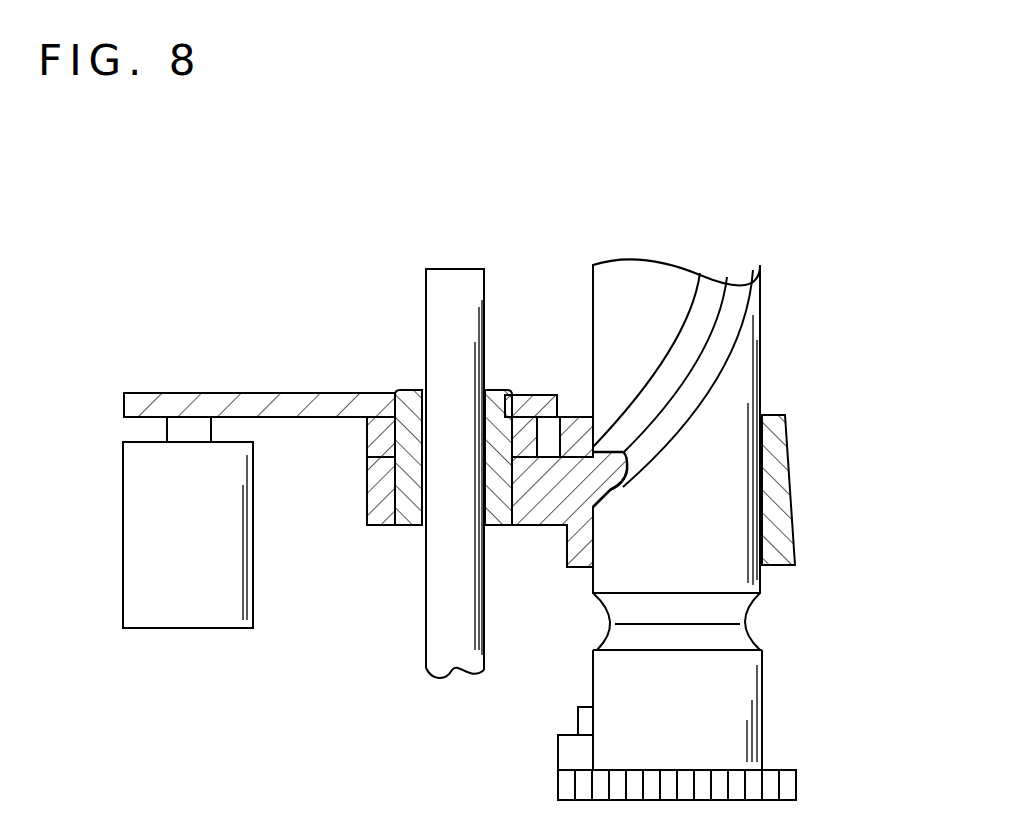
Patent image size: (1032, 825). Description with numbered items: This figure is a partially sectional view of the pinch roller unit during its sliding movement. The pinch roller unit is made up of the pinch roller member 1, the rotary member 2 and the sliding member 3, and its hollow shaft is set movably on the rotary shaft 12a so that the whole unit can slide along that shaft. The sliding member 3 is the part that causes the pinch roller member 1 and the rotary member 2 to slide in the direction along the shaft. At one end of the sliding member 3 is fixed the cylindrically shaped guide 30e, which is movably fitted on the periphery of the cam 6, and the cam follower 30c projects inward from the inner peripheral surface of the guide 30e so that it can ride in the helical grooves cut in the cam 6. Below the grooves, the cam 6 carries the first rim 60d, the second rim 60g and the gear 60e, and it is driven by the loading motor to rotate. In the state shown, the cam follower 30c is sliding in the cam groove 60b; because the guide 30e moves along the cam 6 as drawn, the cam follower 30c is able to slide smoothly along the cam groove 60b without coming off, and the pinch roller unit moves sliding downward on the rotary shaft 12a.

The pinch roller member 1 is at (252, 393).
The rotary member 2 is at (367, 438).
The sliding member 3 is at (378, 527).
The rotary shaft 12a is at (426, 622).
The cam follower 30c is at (605, 482).
The guide 30e is at (797, 481).
The cam groove 60b is at (717, 358).
The first rim 60d is at (558, 757).
The gear 60e is at (796, 785).
The second rim 60g is at (577, 713).
The cam 6 is at (762, 718).